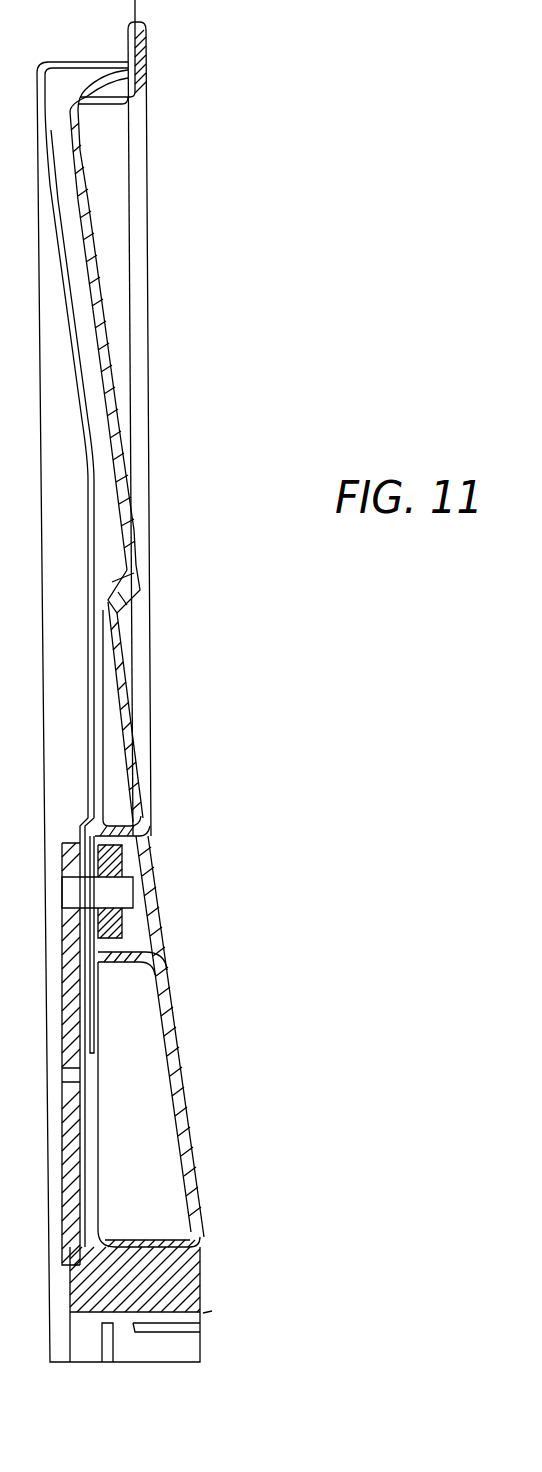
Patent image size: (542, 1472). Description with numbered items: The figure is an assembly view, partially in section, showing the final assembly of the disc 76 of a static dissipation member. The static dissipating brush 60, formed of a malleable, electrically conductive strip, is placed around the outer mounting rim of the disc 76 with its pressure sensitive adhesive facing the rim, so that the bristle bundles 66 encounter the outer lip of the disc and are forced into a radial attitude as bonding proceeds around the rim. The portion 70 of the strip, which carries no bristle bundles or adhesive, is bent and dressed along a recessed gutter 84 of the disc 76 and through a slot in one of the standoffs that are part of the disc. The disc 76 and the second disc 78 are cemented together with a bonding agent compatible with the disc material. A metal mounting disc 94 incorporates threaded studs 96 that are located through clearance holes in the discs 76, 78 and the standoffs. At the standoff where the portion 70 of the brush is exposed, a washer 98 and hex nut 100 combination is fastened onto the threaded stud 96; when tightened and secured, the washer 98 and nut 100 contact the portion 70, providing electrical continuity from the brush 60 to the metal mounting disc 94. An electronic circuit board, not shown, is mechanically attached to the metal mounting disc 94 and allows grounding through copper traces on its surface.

The static dissipating brush 60 is at (88, 60).
The bundles of bristles 66 is at (138, 12).
The disc 76 is at (147, 100).
The disc 78 is at (53, 155).
The recessed gutter 84 is at (85, 352).
The portion of strip 70 is at (133, 612).
The washer 98 is at (150, 835).
The hex nut 100 is at (120, 855).
The threaded stud 96 is at (120, 890).
The metal mounting disc 94 is at (70, 1138).